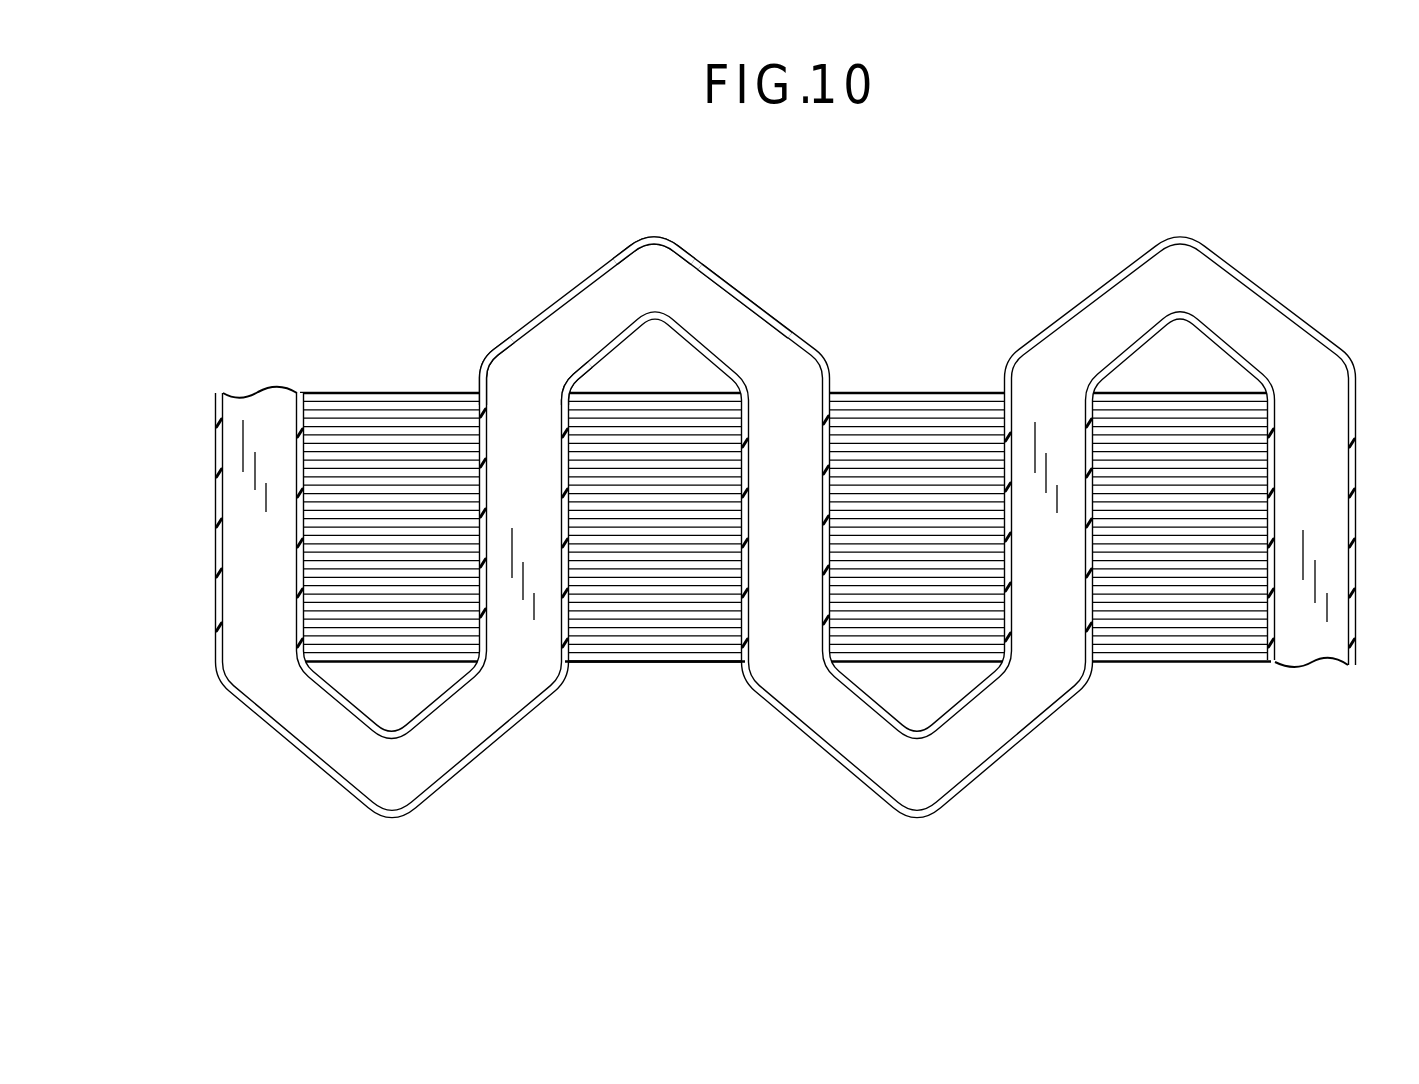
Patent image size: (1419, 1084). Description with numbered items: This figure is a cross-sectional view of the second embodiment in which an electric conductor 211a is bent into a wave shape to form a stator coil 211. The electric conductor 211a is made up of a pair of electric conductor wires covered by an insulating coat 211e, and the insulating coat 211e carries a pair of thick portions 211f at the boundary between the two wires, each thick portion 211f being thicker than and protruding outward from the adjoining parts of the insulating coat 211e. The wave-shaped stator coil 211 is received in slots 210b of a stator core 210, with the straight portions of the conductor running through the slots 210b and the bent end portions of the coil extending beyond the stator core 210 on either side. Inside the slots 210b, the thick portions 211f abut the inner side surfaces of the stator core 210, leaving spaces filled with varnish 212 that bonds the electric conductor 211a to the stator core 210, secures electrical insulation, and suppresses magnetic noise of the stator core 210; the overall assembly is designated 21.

The stator coil (wave winding) 21 is at (945, 209).
The stator coil 211 is at (659, 232).
The electric conductor 211a is at (660, 212).
The insulating coat 211e is at (736, 306).
The thick portions 211f is at (605, 347).
The varnish 212 is at (479, 432).
The stator core 210 is at (648, 664).
The slots 210b is at (222, 630).